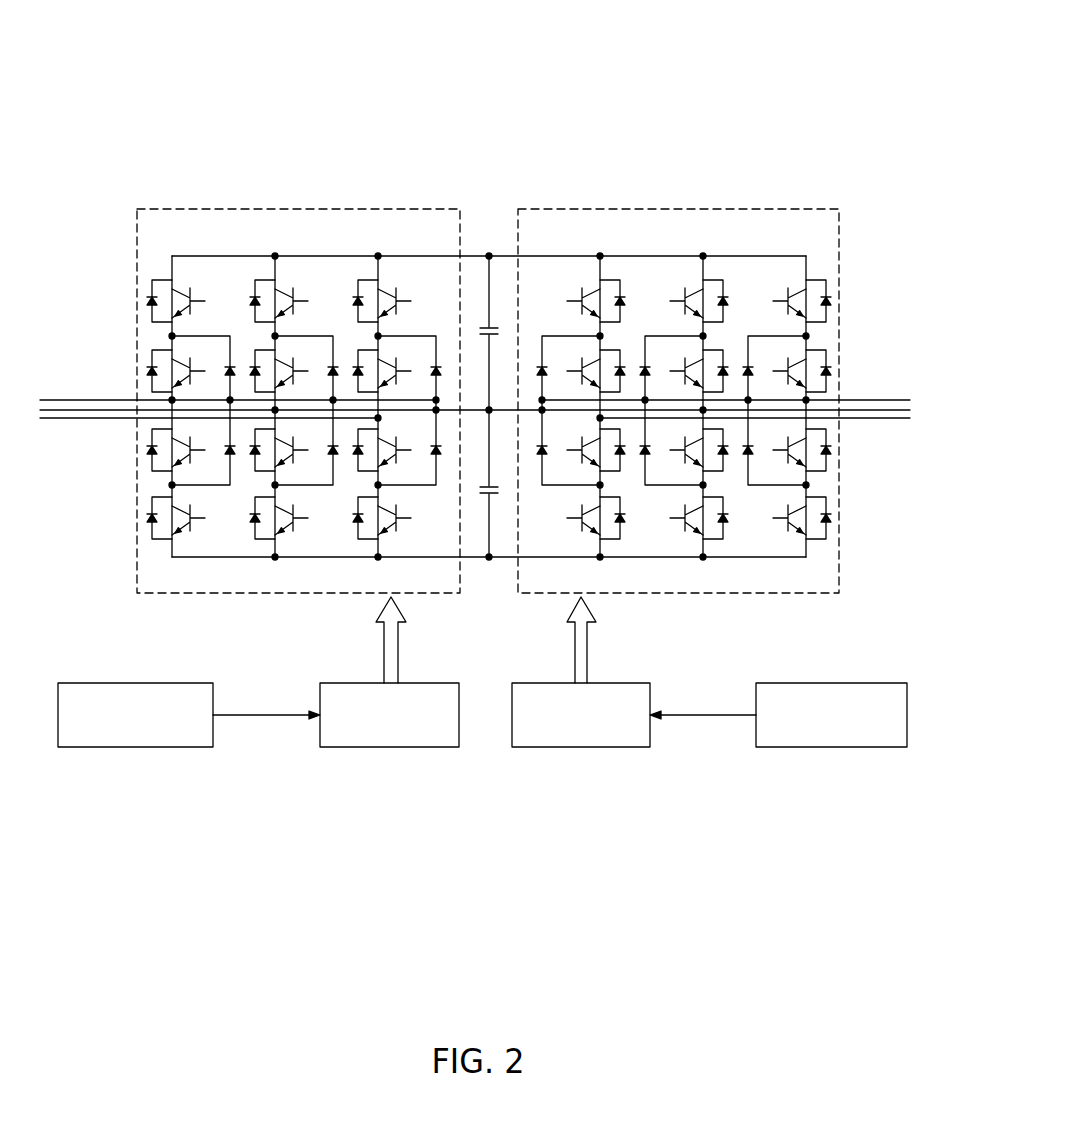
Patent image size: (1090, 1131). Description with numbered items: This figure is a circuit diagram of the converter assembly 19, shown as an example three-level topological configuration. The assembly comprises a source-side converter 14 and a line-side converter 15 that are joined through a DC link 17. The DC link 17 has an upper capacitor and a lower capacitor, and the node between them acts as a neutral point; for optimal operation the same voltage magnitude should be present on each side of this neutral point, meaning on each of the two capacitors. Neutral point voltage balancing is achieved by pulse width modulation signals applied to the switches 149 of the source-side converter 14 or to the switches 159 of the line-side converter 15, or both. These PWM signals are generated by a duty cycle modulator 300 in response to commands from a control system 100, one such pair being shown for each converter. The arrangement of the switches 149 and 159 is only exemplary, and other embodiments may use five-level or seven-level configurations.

The converter assembly 19 is at (180, 89).
The source-side converter 14 is at (255, 209).
The line-side converter 15 is at (678, 209).
The DC link 17 is at (497, 212).
The switches 149 is at (299, 298).
The switches 159 is at (777, 275).
The control system 100 is at (118, 683).
The duty cycle modulator 300 is at (390, 748).